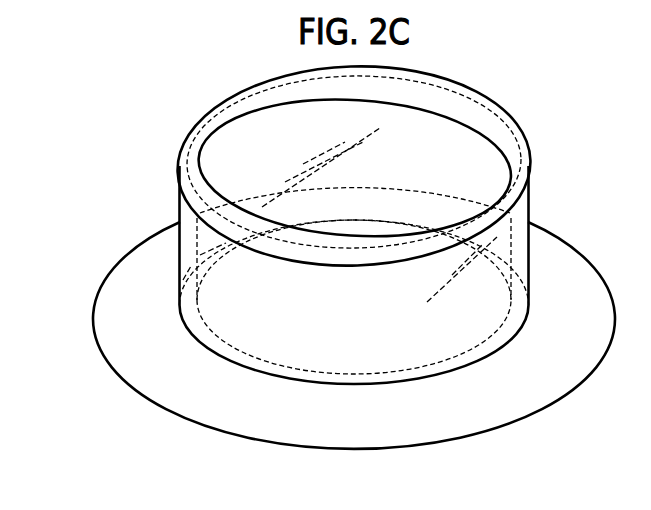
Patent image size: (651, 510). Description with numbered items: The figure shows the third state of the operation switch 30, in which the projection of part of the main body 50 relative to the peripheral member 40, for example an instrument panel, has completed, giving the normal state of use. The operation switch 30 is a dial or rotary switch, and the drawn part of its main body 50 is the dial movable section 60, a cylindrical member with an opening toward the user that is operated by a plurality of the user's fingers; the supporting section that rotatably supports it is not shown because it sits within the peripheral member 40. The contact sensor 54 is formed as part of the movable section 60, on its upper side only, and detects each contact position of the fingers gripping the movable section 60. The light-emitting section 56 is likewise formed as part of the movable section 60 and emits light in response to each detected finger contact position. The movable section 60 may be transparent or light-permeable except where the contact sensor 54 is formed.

The operation switch 30 is at (273, 240).
The peripheral member 40 is at (583, 360).
The main body 50 is at (293, 222).
The contact sensor 54 is at (184, 137).
The light-emitting section 56 is at (180, 262).
The dial movable section 60 is at (276, 350).